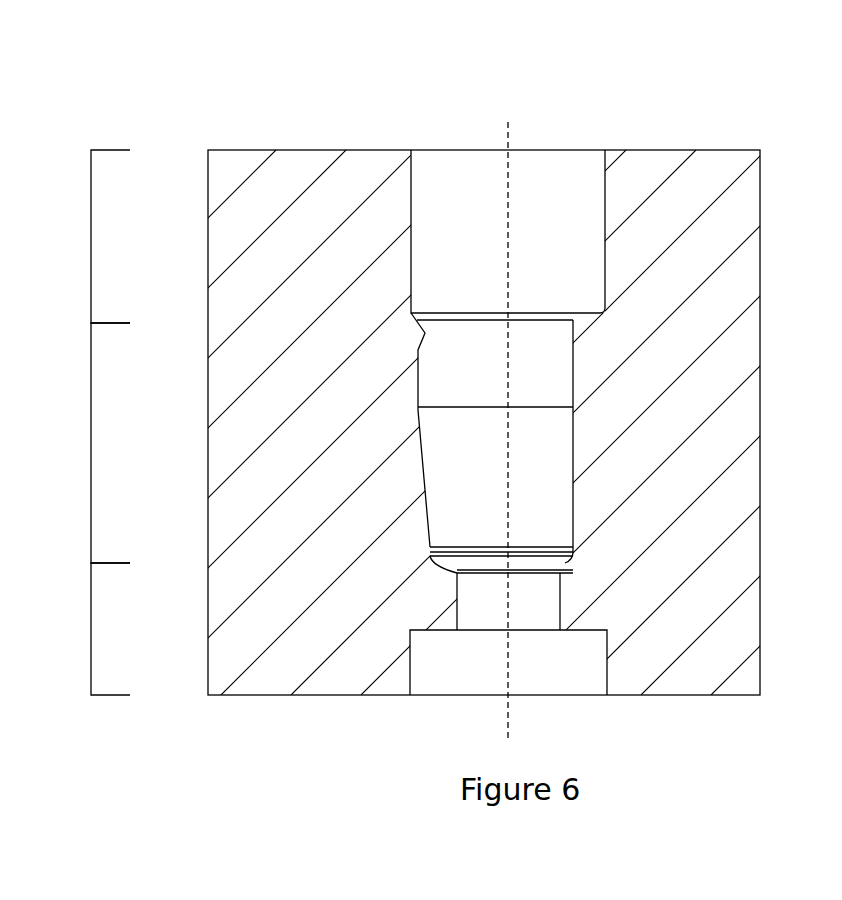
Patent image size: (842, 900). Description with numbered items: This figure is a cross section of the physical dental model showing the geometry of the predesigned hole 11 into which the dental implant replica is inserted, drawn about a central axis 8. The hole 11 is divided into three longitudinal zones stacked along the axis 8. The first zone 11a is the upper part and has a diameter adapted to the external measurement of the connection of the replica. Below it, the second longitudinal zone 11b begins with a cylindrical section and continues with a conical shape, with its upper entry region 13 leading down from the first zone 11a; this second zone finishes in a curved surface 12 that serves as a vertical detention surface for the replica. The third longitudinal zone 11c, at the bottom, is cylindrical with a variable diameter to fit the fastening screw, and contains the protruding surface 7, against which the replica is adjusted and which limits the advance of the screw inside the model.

The protruding surface 7 is at (434, 642).
The central axis 8 is at (509, 104).
The hole 11 is at (560, 186).
The first zone 11a is at (81, 236).
The second longitudinal zone 11b is at (81, 443).
The third longitudinal zone 11c is at (81, 629).
The curved surface 12 is at (560, 568).
The middle bore 13 is at (437, 333).